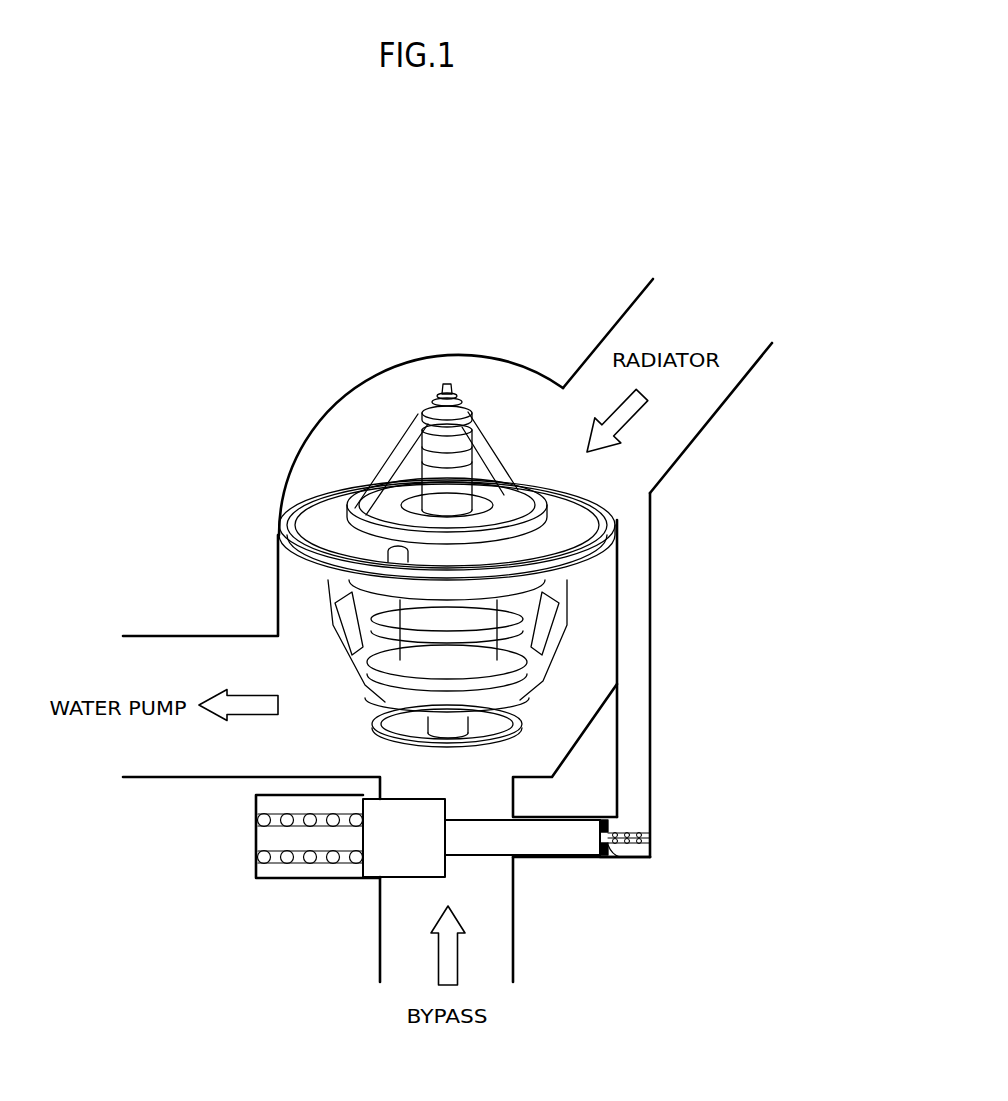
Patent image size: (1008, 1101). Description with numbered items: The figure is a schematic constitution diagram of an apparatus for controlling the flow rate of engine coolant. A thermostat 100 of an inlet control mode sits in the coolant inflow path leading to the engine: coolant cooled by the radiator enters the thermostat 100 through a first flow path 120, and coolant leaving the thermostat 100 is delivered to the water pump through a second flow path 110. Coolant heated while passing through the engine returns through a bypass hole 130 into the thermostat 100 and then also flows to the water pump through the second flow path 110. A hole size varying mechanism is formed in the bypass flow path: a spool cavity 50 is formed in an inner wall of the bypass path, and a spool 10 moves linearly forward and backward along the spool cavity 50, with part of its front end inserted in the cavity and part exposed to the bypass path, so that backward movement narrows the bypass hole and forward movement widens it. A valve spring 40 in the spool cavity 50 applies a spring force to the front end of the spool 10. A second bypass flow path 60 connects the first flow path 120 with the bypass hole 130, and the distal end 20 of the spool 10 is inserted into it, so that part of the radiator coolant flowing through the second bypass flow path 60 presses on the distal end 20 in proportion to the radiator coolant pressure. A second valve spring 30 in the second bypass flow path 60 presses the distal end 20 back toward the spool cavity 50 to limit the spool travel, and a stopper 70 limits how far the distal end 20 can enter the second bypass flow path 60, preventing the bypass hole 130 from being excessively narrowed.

The spool 10 is at (380, 858).
The distal end 20 is at (563, 845).
The second valve spring 30 is at (625, 830).
The valve spring 40 is at (300, 820).
The spool cavity 50 is at (252, 873).
The second bypass flow path 60 is at (652, 618).
The stopper 70 is at (622, 858).
The thermostat 100 is at (332, 492).
The second flow path 110 is at (172, 652).
The first flow path 120 is at (640, 322).
The bypass hole 130 is at (388, 945).